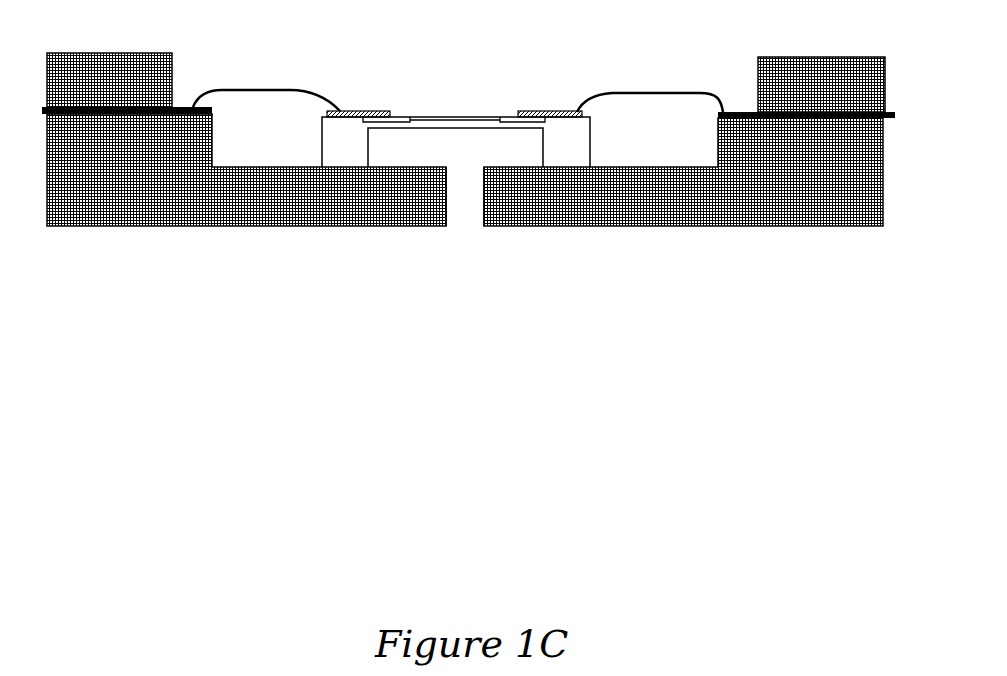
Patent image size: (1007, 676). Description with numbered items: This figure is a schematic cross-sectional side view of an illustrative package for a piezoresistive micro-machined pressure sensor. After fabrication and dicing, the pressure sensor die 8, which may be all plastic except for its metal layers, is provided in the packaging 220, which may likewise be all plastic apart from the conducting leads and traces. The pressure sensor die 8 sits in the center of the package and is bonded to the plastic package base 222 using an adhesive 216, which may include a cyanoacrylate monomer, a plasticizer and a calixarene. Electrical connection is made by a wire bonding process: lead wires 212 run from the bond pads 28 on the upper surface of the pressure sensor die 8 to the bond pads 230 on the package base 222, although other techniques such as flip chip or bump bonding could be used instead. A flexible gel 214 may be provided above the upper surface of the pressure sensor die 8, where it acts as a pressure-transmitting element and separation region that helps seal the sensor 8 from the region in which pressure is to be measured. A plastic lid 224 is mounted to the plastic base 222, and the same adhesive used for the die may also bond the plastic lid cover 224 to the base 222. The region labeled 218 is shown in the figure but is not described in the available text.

The pressure sensor die 8 is at (455, 95).
The bond pads 28 is at (365, 112).
The lead wires 212 is at (263, 90).
The flexible gel 214 is at (643, 78).
The adhesive 216 is at (343, 170).
The through hole 218 is at (513, 170).
The packaging 220 is at (856, 280).
The plastic package base 222 is at (187, 215).
The plastic lid 224 is at (112, 60).
The bond pads 230 is at (130, 112).